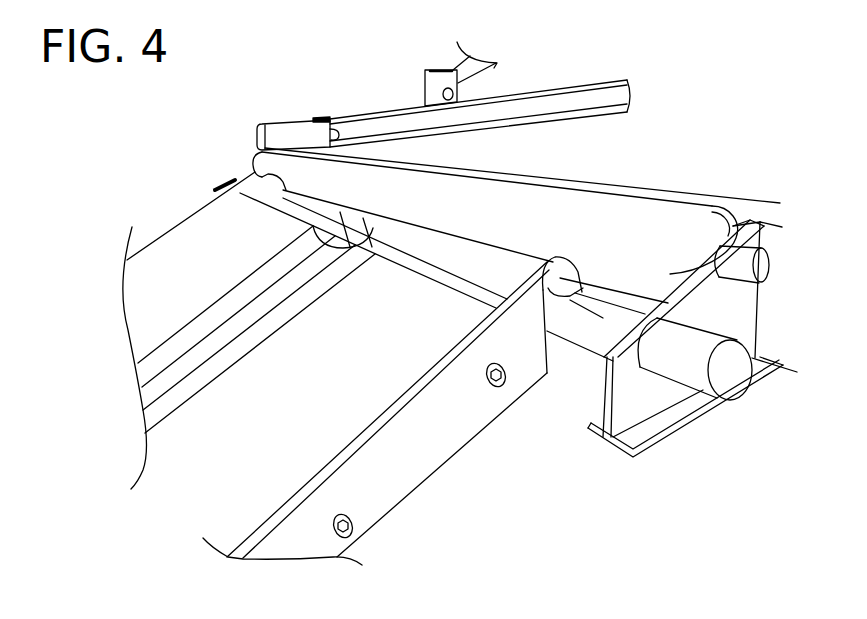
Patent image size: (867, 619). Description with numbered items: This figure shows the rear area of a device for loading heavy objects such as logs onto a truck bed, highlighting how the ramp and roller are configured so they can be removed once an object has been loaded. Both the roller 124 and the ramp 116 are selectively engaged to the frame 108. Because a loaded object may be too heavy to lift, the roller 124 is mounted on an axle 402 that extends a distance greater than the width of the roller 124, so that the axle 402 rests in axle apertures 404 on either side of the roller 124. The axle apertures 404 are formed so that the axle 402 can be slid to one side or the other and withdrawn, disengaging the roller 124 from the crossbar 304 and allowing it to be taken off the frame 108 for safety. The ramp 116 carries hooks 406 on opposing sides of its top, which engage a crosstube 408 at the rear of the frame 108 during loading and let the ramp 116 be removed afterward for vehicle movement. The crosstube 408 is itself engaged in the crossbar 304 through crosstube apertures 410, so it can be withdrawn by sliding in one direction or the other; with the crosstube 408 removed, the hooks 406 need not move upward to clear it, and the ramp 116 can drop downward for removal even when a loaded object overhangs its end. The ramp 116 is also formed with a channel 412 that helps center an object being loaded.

The frame 108 is at (557, 89).
The roller 124 is at (634, 203).
The crossbar 304 is at (777, 204).
The axle apertures 404 is at (734, 214).
The axle 402 is at (769, 270).
The hooks 406 is at (582, 286).
The crosstube apertures 410 is at (662, 318).
The crosstube 408 is at (745, 354).
The channel 412 is at (284, 310).
The ramp 116 is at (453, 446).